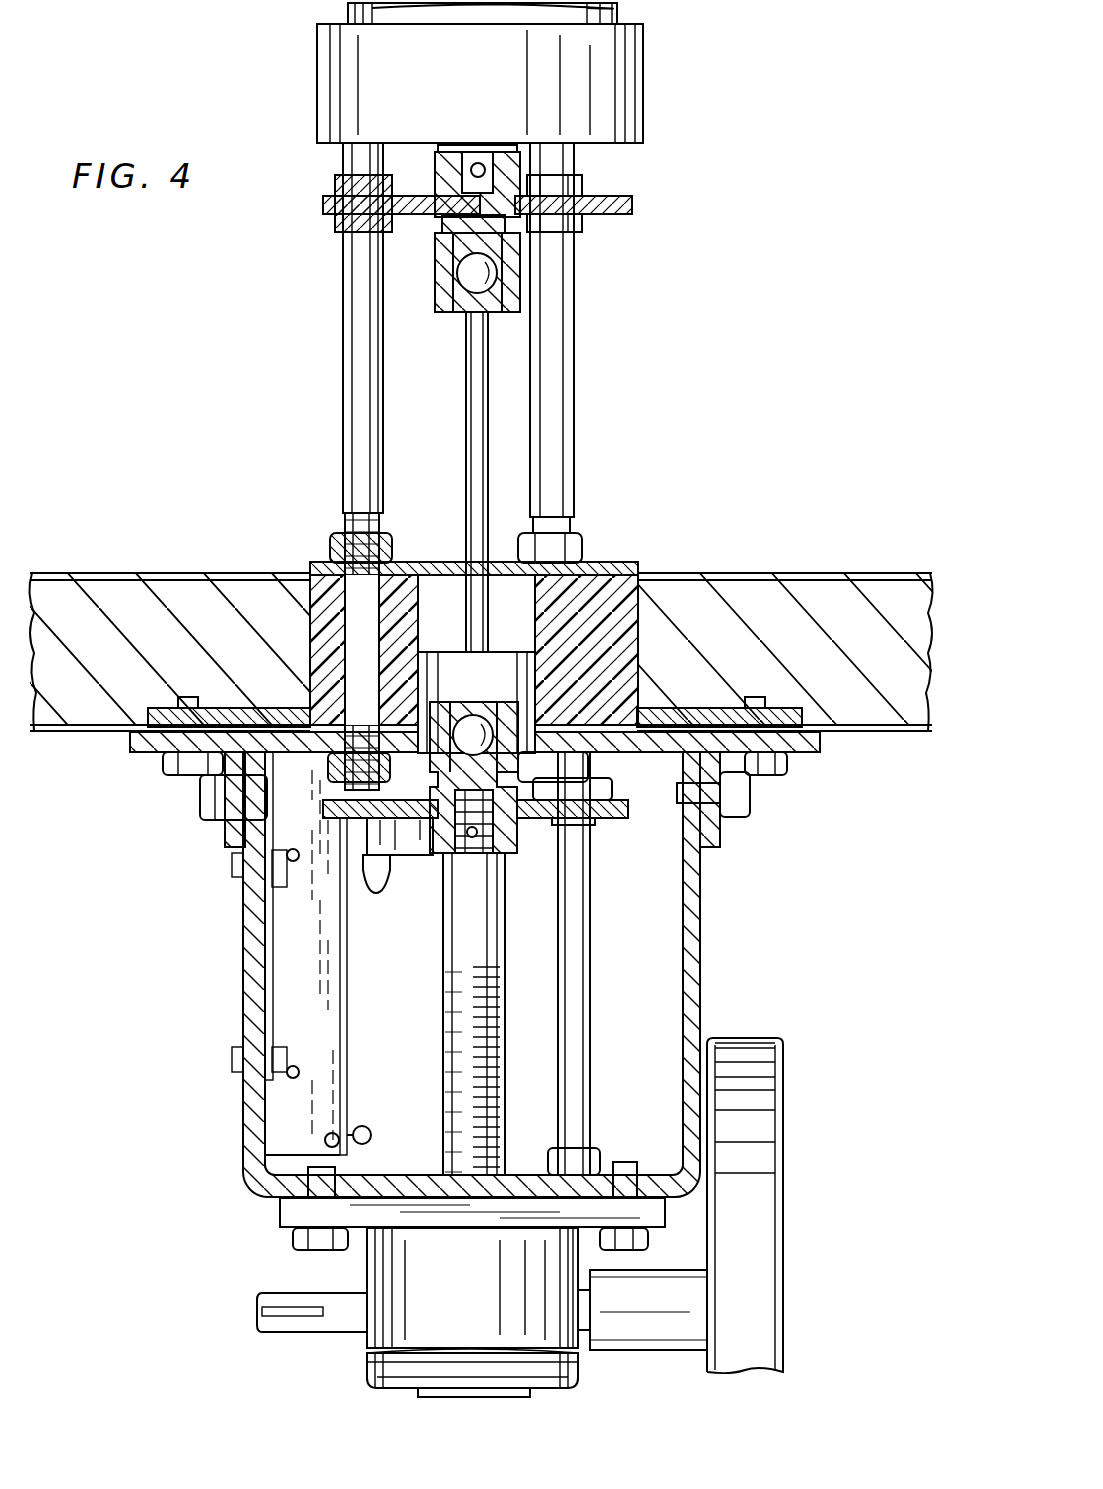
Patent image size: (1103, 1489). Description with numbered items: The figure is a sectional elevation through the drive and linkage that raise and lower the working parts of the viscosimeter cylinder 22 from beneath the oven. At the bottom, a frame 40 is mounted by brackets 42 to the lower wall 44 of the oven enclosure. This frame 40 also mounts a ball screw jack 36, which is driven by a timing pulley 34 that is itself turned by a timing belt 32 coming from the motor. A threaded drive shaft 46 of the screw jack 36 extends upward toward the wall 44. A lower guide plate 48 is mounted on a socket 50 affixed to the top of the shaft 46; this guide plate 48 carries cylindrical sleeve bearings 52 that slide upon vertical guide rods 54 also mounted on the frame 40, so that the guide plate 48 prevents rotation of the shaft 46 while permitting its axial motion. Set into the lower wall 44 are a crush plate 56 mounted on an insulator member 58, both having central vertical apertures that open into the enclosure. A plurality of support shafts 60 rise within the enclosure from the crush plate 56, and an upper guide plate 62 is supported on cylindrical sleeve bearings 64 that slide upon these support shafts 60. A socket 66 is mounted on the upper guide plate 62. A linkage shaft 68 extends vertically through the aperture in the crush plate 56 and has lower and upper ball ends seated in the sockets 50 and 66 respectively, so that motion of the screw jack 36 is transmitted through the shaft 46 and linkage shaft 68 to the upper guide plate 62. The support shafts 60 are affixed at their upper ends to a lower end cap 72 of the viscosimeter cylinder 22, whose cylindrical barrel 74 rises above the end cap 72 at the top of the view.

The viscosimeter cylinder 22 is at (630, 11).
The timing belt 32 is at (757, 1041).
The timing pulley 34 is at (783, 1051).
The ball screw jack 36 is at (367, 1278).
The frame 40 is at (241, 1020).
The brackets 42 is at (233, 831).
The lower wall 44 is at (795, 597).
The threaded drive shaft 46 is at (443, 1020).
The lower guide plate 48 is at (330, 811).
The socket 50 is at (438, 792).
The cylindrical sleeve bearings 52 is at (596, 826).
The vertical guide rods 54 is at (590, 966).
The crush plate 56 is at (640, 566).
The insulator member 58 is at (320, 605).
The support shafts 60 is at (565, 375).
The upper guide plate 62 is at (632, 200).
The cylindrical sleeve bearings 64 is at (335, 182).
The socket 66 is at (437, 300).
The linkage shaft 68 is at (465, 495).
The lower end cap 72 is at (645, 101).
The cylindrical barrel 74 is at (345, 10).